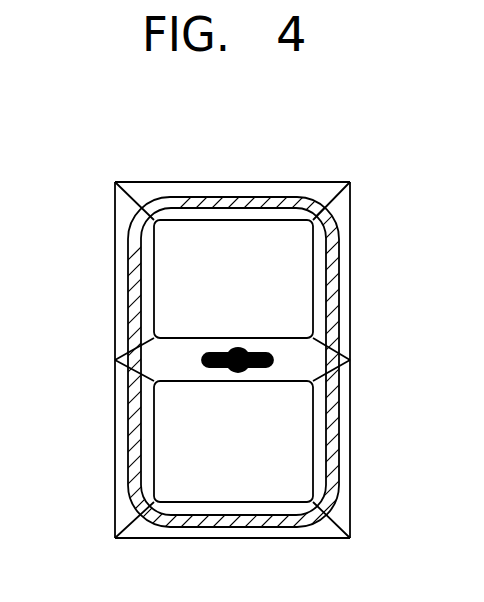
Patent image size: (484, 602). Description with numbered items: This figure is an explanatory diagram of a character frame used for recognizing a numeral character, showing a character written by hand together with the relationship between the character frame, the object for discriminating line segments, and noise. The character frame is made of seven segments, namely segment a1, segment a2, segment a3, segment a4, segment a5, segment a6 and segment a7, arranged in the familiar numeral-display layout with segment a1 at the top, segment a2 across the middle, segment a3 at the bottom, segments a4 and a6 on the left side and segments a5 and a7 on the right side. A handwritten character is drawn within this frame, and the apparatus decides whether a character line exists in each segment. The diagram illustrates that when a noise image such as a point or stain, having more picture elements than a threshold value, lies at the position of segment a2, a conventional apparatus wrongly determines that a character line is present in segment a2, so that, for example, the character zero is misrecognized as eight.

The segment a1 is at (241, 181).
The segment a2 is at (240, 337).
The segment a3 is at (230, 502).
The segment a4 is at (115, 270).
The segment a5 is at (350, 253).
The segment a6 is at (115, 468).
The segment a7 is at (350, 438).